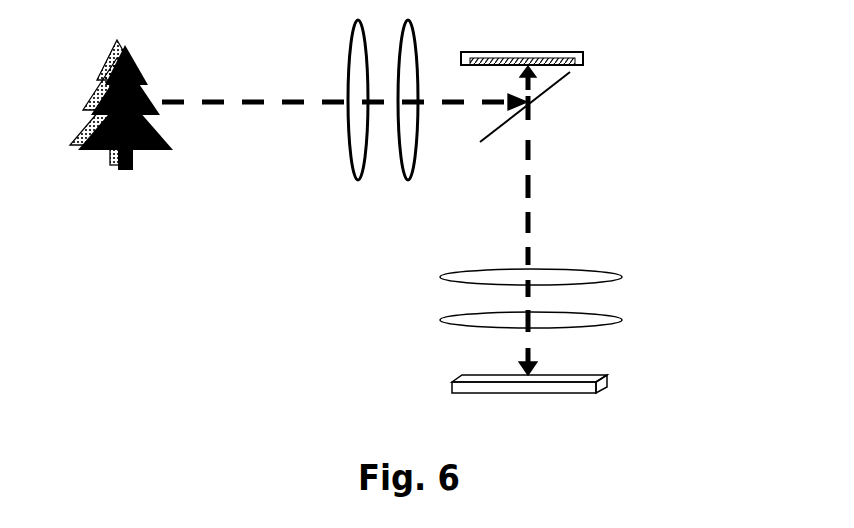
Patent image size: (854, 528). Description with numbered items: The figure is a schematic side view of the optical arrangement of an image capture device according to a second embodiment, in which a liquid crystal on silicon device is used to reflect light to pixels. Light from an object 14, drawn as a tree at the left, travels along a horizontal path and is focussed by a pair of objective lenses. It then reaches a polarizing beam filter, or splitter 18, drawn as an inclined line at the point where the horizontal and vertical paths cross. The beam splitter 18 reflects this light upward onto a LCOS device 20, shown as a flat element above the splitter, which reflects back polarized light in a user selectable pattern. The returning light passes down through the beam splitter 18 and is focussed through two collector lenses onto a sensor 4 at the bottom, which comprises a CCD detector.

The object 14 is at (130, 52).
The LCOS device 20 is at (547, 45).
The polarizing beam splitter 18 is at (550, 98).
The sensor 4 is at (605, 377).